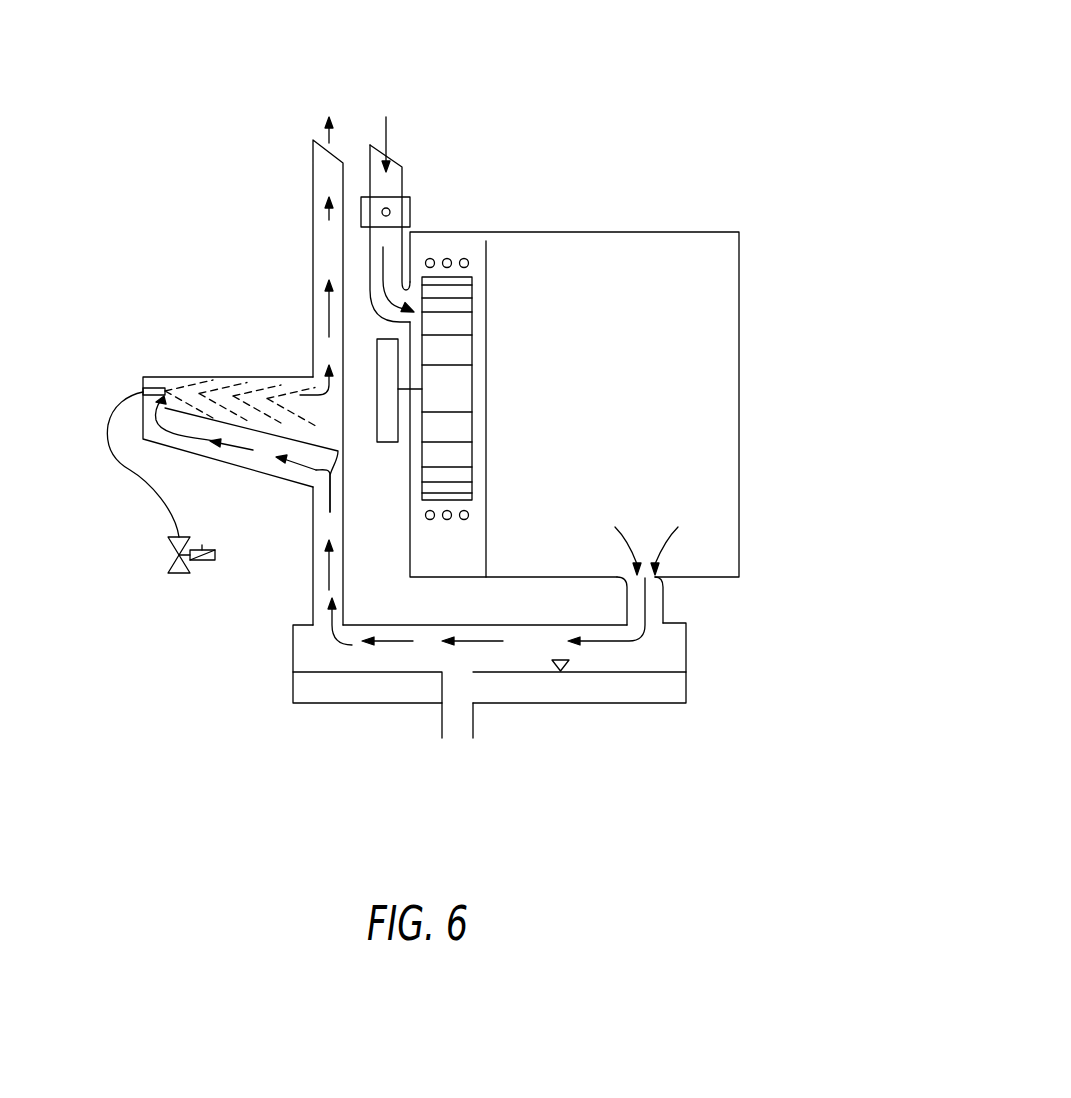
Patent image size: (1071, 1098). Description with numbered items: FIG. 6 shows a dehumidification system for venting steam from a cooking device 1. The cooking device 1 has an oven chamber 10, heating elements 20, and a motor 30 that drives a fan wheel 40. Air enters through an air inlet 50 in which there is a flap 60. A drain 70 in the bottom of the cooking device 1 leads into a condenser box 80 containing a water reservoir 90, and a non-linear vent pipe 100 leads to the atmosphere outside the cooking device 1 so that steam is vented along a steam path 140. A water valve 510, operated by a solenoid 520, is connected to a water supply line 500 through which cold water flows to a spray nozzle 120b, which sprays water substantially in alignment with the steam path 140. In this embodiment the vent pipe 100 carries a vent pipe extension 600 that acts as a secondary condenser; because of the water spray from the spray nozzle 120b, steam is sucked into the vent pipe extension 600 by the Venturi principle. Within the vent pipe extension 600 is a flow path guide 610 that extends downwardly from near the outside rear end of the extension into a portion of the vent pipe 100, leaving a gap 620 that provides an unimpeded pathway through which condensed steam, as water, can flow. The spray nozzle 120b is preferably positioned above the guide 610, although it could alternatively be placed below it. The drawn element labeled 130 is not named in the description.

The cooking device 1 is at (708, 89).
The oven chamber 10 is at (710, 286).
The heating elements 20 is at (442, 253).
The motor 30 is at (388, 361).
The fan wheel 40 is at (448, 353).
The air inlet 50 is at (392, 170).
The flap 60 is at (378, 208).
The drain 70 is at (665, 580).
The condenser box 80 is at (667, 642).
The water reservoir 90 is at (667, 692).
The vent pipe 100 is at (325, 586).
The spray nozzle 120b is at (143, 390).
The drain pipe 130 is at (473, 720).
The steam path 140 is at (395, 645).
The water supply line 500 is at (120, 462).
The water valve 510 is at (170, 553).
The solenoid 520 is at (203, 560).
The vent pipe extension 600 is at (163, 375).
The flow path guide 610 is at (268, 441).
The gap 620 is at (316, 471).